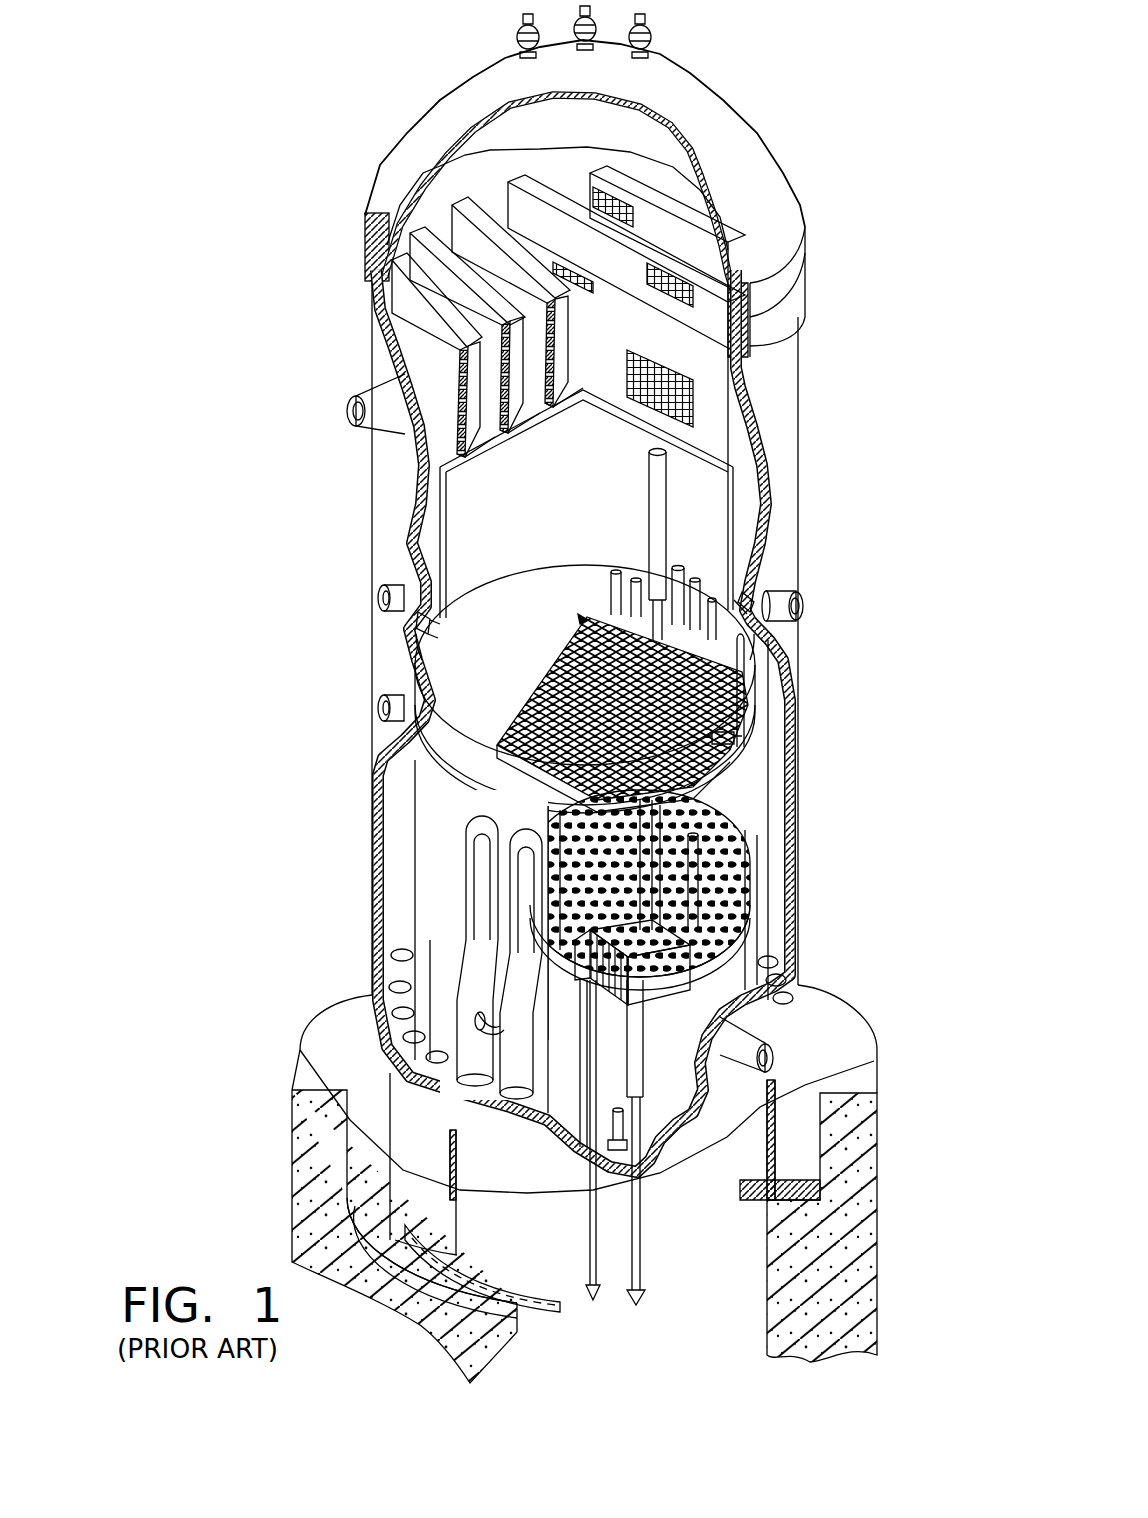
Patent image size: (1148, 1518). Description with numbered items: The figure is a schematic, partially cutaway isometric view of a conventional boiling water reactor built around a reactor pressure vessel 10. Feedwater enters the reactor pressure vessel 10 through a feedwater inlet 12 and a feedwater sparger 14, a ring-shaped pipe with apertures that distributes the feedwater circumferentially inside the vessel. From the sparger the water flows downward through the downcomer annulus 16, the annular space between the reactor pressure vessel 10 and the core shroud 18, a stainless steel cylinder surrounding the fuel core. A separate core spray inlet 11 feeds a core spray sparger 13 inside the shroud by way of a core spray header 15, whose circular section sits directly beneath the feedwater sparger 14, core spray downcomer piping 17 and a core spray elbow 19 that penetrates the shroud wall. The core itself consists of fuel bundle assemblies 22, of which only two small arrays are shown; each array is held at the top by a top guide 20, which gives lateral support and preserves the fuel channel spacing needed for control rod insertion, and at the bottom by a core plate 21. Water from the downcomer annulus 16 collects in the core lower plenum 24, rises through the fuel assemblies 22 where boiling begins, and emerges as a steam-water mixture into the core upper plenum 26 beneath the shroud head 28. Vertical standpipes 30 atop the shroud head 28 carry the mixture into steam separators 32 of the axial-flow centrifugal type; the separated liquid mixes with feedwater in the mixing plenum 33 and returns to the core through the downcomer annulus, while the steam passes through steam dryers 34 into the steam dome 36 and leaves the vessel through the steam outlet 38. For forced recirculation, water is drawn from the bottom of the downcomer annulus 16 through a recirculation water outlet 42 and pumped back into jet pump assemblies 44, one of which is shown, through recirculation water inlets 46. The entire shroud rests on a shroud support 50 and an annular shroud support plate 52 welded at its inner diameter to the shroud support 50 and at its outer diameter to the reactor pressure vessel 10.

The reactor pressure vessel 10 is at (377, 918).
The core spray inlet 11 is at (378, 602).
The feedwater inlet 12 is at (805, 608).
The core spray sparger 13 is at (712, 790).
The feedwater sparger 14 is at (755, 596).
The core spray header 15 is at (416, 637).
The downcomer annulus 16 is at (396, 893).
The core spray downcomer piping 17 is at (746, 708).
The core shroud 18 is at (432, 790).
The core spray elbow 19 is at (738, 736).
The top guide 20 is at (724, 692).
The core plate 21 is at (740, 907).
The fuel bundle assemblies 22 is at (660, 823).
The core lower plenum 24 is at (660, 1103).
The core upper plenum 26 is at (586, 618).
The shroud head 28 is at (530, 575).
The standpipes 30 is at (695, 562).
The steam separators 32 is at (655, 470).
The mixing plenum 33 is at (617, 505).
The steam dryers 34 is at (583, 340).
The steam dome 36 is at (497, 120).
The steam outlet 38 is at (352, 405).
The recirculation water outlet 42 is at (773, 1056).
The jet pump assemblies 44 is at (456, 878).
The recirculation water inlets 46 is at (498, 1024).
The shroud support 50 is at (432, 985).
The shroud support plate 52 is at (380, 1040).